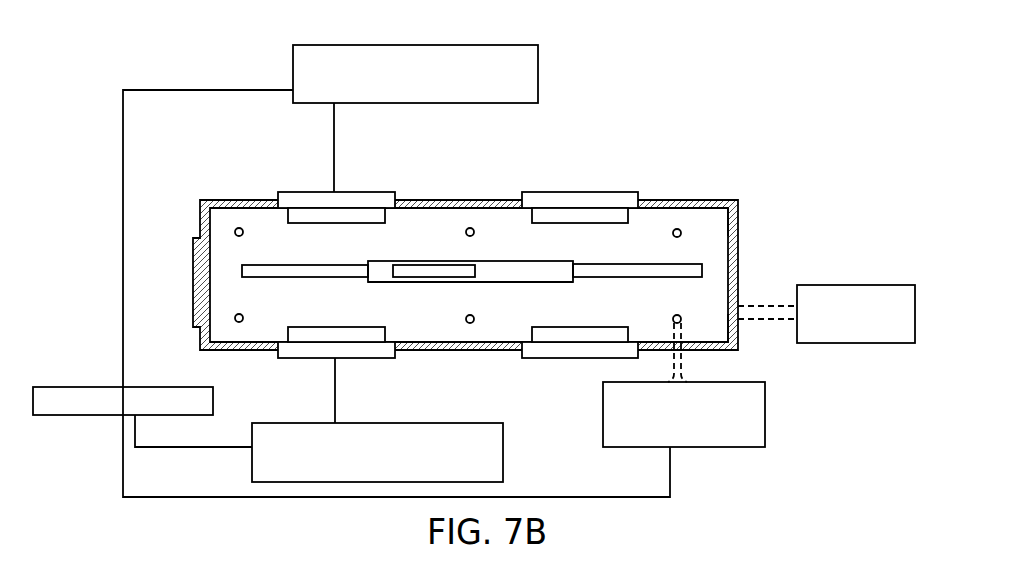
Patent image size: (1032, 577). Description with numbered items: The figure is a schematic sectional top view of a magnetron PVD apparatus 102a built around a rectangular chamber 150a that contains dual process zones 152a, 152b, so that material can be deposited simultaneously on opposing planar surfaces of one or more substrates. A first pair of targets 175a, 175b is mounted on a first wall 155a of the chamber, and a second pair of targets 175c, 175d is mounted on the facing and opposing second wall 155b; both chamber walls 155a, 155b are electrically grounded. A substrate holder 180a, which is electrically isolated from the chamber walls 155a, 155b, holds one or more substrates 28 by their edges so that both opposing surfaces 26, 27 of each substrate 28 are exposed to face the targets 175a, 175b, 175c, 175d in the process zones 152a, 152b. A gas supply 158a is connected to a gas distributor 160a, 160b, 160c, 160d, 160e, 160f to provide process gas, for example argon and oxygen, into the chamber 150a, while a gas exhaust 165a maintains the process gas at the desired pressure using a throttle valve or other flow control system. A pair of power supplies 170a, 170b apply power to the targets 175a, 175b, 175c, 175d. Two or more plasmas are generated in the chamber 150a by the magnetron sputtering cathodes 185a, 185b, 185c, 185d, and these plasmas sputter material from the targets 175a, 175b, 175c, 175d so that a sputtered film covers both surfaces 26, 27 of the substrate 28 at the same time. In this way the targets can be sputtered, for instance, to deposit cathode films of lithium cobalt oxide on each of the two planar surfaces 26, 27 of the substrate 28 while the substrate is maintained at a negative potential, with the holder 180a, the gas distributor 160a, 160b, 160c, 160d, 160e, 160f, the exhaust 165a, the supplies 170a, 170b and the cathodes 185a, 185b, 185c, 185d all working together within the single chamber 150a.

The apparatus 102a is at (567, 62).
The rectangular chamber 150a is at (692, 114).
The first process zone 152a is at (543, 254).
The second process zone 152b is at (543, 318).
The first wall 155a is at (708, 209).
The second wall 155b is at (717, 337).
The gas supply 158a is at (765, 415).
The gas distributor 160a is at (239, 228).
The gas distributor 160b is at (470, 228).
The gas distributor 160c is at (681, 233).
The gas distributor 160d is at (238, 322).
The gas distributor 160e is at (470, 323).
The gas distributor 160f is at (676, 315).
The gas exhaust 165a is at (880, 343).
The power supply 170a is at (293, 58).
The power supply 170b is at (252, 461).
The target 175a is at (351, 225).
The target 175b is at (616, 225).
The target 175c is at (362, 324).
The target 175d is at (579, 324).
The substrate holder 180a is at (569, 260).
The magnetron sputtering cathode 185a is at (311, 179).
The magnetron sputtering cathode 185b is at (620, 150).
The magnetron sputtering cathode 185c is at (317, 374).
The magnetron sputtering cathode 185d is at (525, 374).
The surface 26 is at (413, 258).
The surface 27 is at (422, 285).
The substrate 28 is at (432, 265).